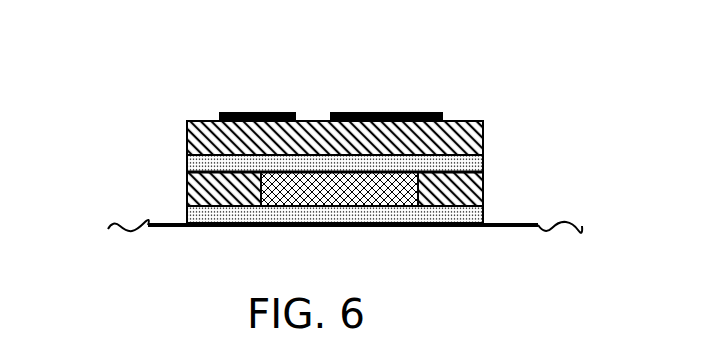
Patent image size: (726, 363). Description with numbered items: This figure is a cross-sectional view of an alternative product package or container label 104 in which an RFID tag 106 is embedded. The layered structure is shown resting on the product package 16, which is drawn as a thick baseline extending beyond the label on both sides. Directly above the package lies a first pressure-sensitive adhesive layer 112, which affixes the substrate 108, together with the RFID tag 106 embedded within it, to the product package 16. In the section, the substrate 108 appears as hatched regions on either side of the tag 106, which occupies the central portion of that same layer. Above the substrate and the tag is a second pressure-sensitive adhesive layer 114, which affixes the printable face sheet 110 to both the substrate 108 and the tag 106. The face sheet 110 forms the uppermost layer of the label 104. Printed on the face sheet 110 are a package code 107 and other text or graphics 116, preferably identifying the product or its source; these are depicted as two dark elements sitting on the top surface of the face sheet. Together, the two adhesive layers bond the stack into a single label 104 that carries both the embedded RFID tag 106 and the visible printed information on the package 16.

The product package 16 is at (507, 228).
The label 104 is at (325, 165).
The RFID tag 106 is at (322, 195).
The package code 107 is at (373, 111).
The substrate 108 is at (483, 188).
The printable face sheet 110 is at (483, 133).
The first pressure-sensitive adhesive layer 112 is at (187, 212).
The second pressure-sensitive adhesive layer 114 is at (187, 163).
The text or graphics 116 is at (240, 112).